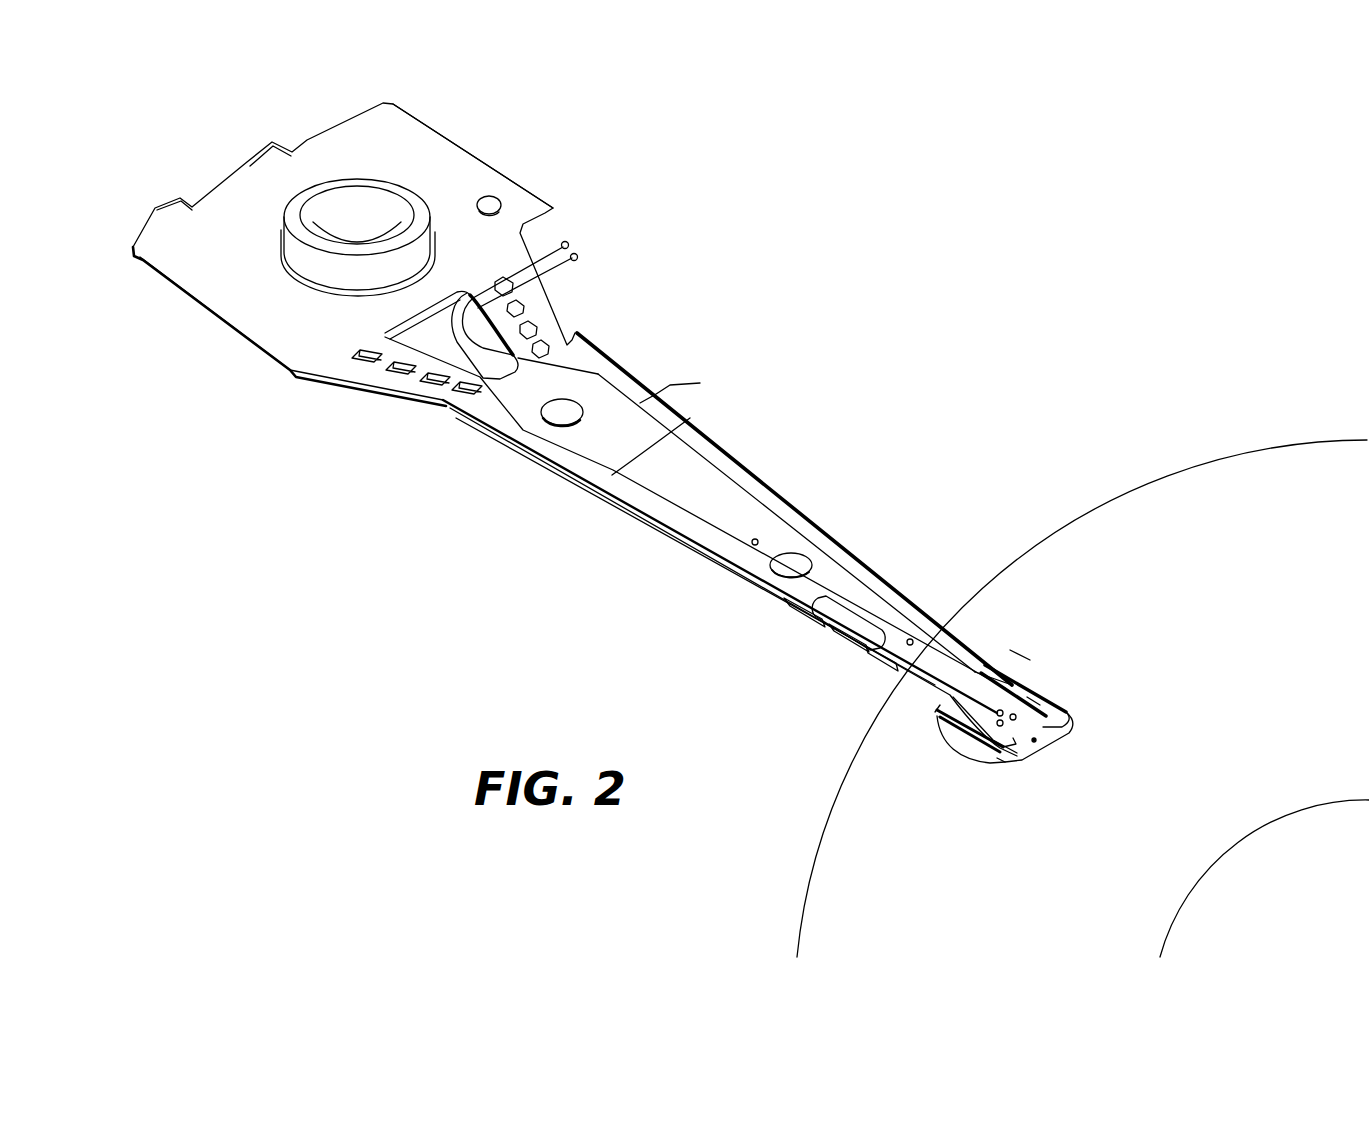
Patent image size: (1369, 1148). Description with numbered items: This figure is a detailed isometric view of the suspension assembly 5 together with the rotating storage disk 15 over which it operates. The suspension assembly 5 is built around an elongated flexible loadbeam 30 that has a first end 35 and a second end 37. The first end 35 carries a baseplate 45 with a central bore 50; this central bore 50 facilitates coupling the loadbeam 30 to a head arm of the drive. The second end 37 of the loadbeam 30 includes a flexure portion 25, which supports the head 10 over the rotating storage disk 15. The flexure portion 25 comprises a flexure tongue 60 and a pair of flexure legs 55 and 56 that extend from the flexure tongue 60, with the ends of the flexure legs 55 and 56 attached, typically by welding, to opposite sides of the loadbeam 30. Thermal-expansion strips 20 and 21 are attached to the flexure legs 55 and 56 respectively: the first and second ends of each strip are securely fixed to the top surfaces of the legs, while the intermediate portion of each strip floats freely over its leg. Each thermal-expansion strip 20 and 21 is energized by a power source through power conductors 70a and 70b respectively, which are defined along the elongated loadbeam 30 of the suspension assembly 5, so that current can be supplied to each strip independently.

The suspension assembly 5 is at (377, 502).
The head 10 is at (997, 753).
The rotating storage disk 15 is at (1082, 565).
The thermal-expansion strip 20 is at (952, 753).
The thermal-expansion strip 21 is at (1047, 697).
The flexure portion 25 is at (1018, 640).
The loadbeam 30 is at (740, 461).
The first end 35 is at (224, 159).
The second end 37 is at (985, 683).
The baseplate 45 is at (441, 129).
The central bore 50 is at (316, 218).
The flexure leg 55 is at (937, 727).
The flexure leg 56 is at (1027, 697).
The flexure tongue 60 is at (1040, 737).
The power conductor 70a is at (612, 475).
The power conductor 70b is at (640, 403).